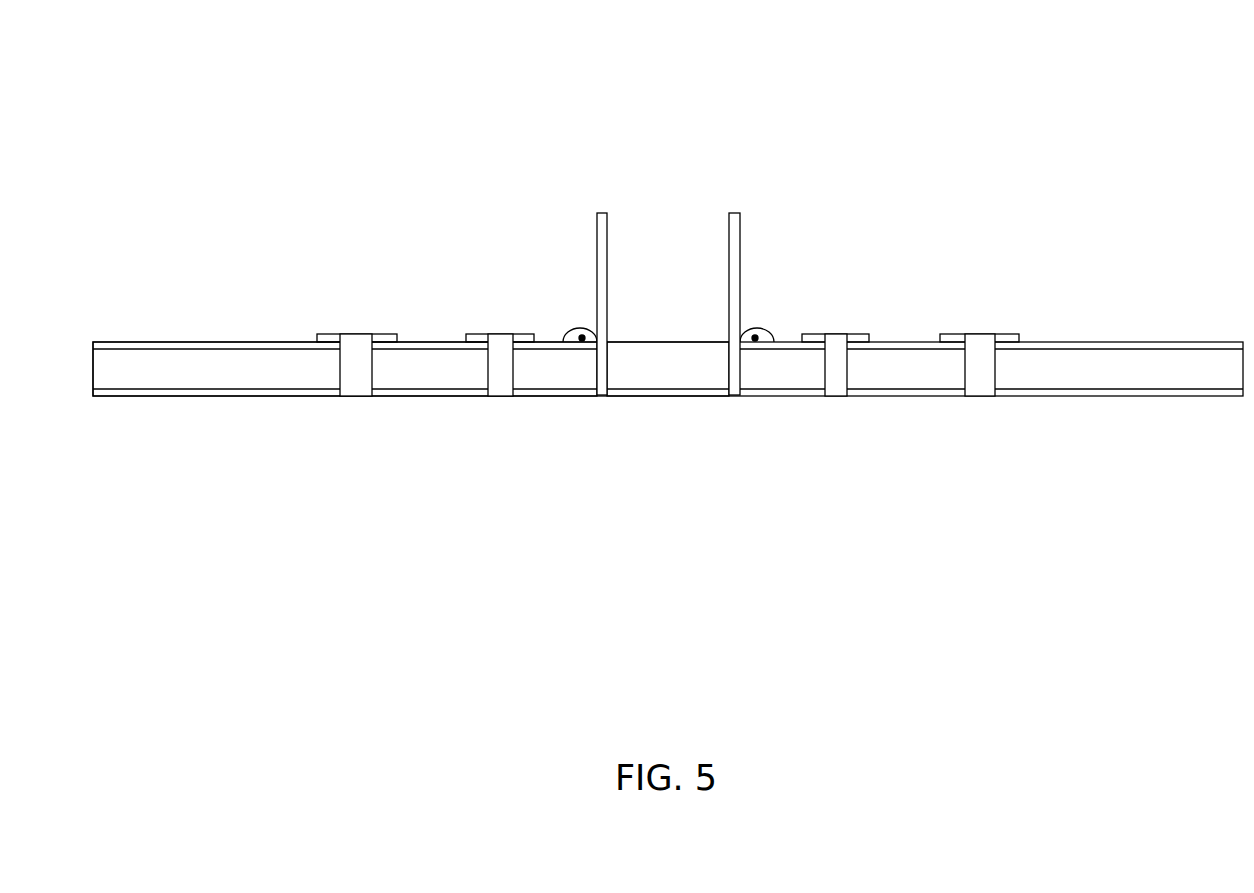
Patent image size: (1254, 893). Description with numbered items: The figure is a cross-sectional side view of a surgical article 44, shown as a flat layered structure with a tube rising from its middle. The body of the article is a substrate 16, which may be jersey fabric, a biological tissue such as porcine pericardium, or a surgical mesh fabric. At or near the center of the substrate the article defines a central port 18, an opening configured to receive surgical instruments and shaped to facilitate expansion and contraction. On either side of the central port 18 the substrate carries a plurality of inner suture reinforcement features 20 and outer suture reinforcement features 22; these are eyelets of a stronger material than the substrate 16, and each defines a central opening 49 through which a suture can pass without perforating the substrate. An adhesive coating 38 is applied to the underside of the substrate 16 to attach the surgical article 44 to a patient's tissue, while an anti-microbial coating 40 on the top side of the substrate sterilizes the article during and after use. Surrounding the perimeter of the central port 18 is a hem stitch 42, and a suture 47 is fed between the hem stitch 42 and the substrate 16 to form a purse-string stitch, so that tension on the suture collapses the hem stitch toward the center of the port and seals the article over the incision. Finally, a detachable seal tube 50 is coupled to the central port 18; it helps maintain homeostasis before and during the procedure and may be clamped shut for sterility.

The substrate material 16 is at (345, 369).
The central port 18 is at (668, 369).
The inner suture reinforcement features 20 is at (478, 333).
The outer suture reinforcement features 22 is at (330, 333).
The adhesive coating 38 is at (239, 396).
The anti-microbial coating 40 is at (163, 342).
The hem stitch 42 is at (568, 335).
The surgical article 44 is at (378, 53).
The suture 47 is at (582, 334).
The central opening 49 is at (502, 338).
The detachable seal tube 50 is at (729, 224).